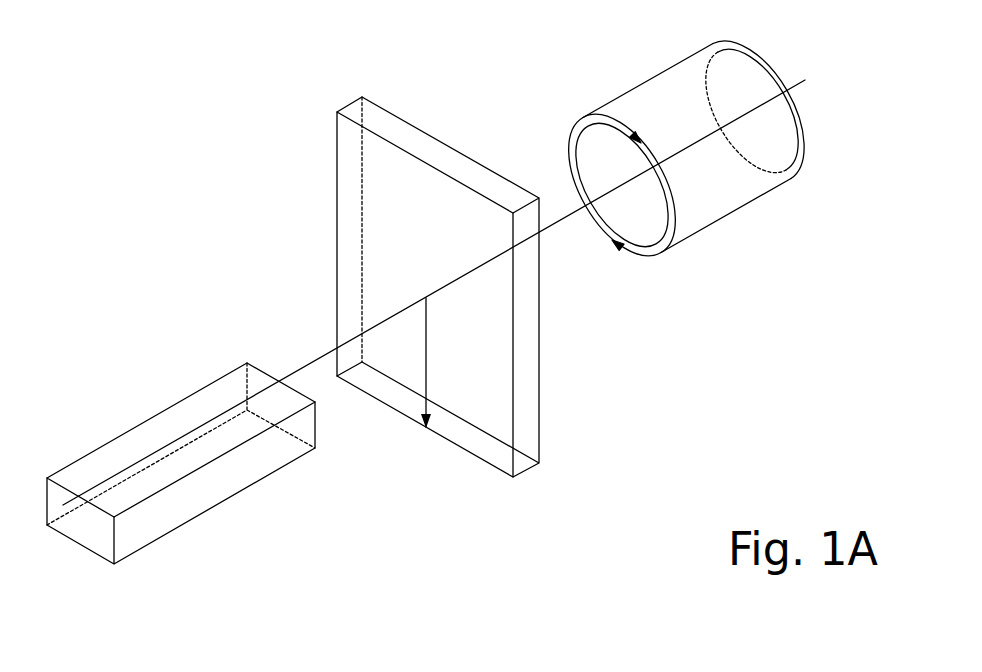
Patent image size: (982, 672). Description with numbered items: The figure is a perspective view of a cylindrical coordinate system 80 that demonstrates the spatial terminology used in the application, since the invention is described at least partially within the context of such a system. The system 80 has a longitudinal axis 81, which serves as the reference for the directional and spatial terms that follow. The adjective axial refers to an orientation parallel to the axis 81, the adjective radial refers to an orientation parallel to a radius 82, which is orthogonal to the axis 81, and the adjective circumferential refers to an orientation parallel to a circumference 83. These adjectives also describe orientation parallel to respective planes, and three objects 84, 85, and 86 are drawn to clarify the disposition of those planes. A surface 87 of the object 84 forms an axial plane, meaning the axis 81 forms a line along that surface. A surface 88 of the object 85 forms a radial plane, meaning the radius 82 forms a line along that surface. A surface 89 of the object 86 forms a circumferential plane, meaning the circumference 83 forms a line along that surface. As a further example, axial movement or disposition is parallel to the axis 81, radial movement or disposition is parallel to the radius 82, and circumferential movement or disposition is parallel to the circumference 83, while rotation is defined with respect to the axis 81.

The cylindrical coordinate system 80 is at (293, 160).
The longitudinal axis 81 is at (800, 80).
The radius 82 is at (427, 355).
The circumference 83 is at (572, 147).
The object 84 is at (143, 550).
The object 85 is at (546, 468).
The object 86 is at (717, 222).
The surface 87 is at (137, 443).
The surface 88 is at (352, 242).
The surface 89 is at (652, 77).